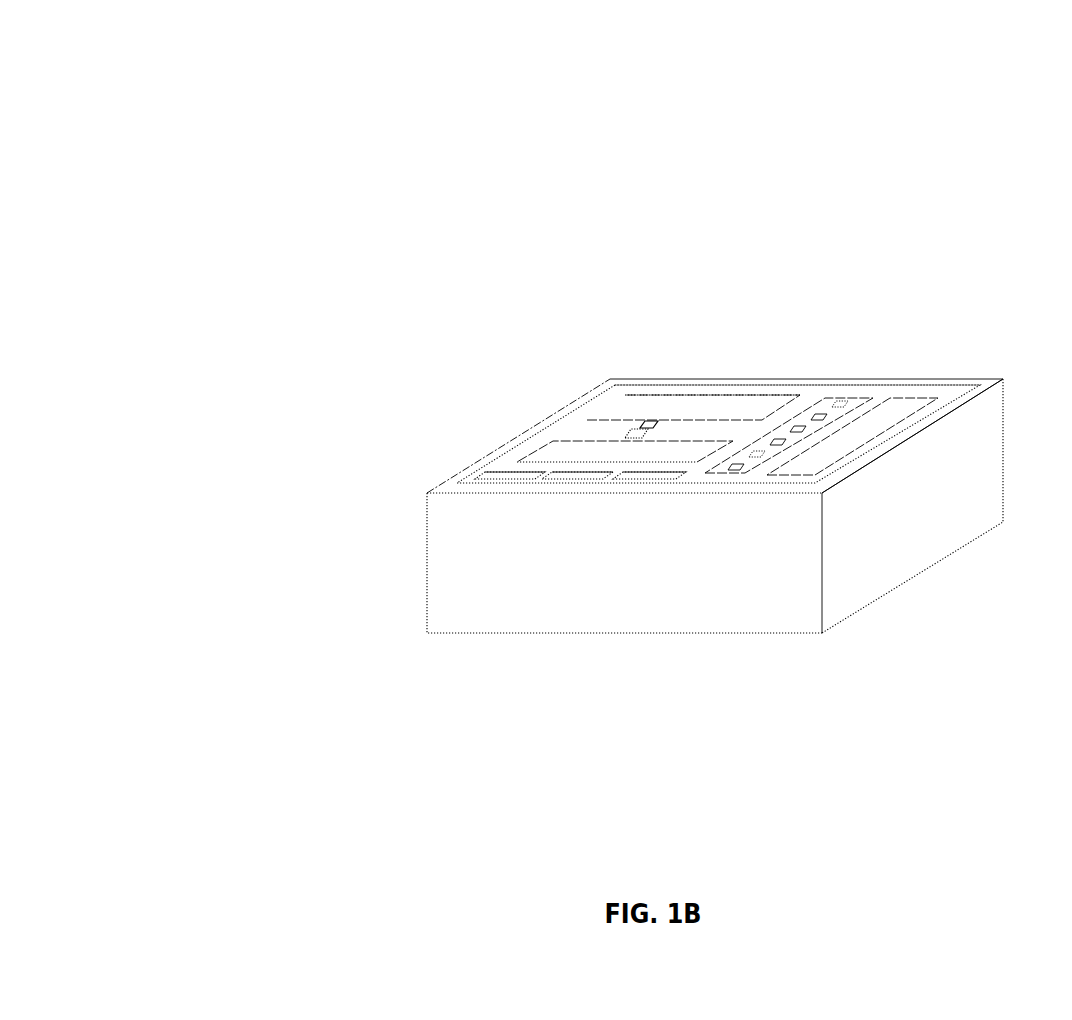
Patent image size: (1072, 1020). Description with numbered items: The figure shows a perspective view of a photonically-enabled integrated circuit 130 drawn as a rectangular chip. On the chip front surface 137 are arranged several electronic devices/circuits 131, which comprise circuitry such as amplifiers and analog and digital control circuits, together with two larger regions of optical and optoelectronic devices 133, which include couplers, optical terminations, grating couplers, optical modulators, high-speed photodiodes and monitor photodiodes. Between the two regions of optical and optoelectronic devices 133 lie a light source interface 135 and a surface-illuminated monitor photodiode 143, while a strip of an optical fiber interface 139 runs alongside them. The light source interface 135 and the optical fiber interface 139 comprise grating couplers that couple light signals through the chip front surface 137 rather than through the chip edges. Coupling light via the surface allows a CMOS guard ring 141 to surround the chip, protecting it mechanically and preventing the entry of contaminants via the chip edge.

The photonically-enabled integrated circuit 130 is at (283, 111).
The electronic devices/circuits 131 is at (645, 480).
The optical and optoelectronic devices 133 is at (691, 415).
The light source interface 135 is at (655, 425).
The chip front surface 137 is at (754, 390).
The optical fiber interface 139 is at (848, 401).
The CMOS guard ring 141 is at (990, 384).
The surface-illuminated monitor photodiode 143 is at (632, 435).